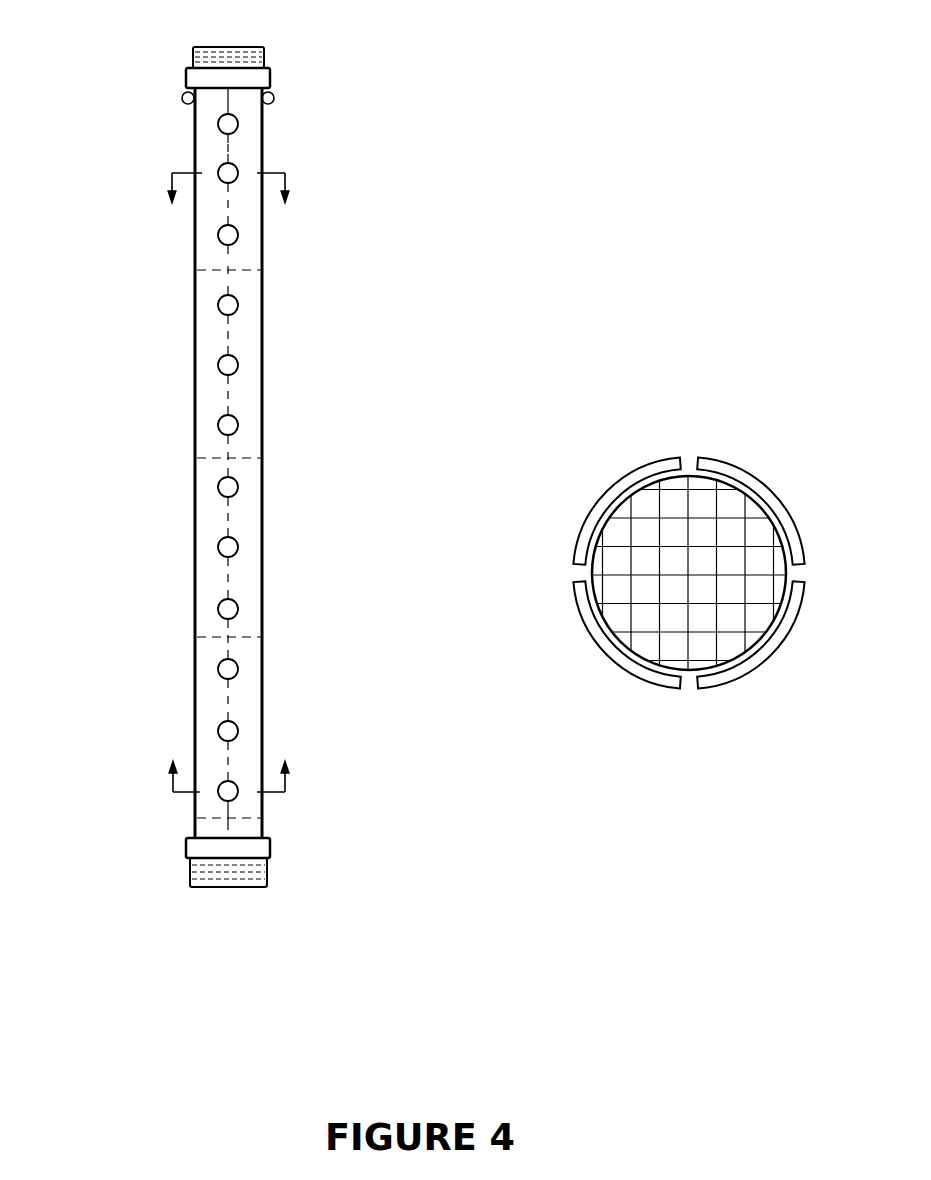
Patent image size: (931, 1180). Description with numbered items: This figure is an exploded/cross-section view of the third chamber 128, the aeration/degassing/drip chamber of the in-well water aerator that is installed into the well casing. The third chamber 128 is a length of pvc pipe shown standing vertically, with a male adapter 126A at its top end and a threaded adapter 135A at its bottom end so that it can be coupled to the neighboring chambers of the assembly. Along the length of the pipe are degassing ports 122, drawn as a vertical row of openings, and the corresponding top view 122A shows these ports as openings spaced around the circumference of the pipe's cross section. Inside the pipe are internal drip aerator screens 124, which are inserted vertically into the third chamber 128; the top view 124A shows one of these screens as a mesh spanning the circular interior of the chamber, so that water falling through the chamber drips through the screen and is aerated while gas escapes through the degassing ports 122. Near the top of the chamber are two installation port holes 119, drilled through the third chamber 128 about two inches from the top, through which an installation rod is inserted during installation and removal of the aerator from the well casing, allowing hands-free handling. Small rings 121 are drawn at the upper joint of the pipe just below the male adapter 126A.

The installation port holes 119 is at (241, 123).
The rings 121 is at (259, 95).
The degassing ports 122 is at (241, 235).
The internal drip aerator screens 124 is at (192, 272).
The male adapter 126A is at (266, 57).
The third chamber 128 is at (265, 365).
The bottom threaded cap 135A is at (269, 868).
The internal drip aerator screen (top view) 124A is at (730, 537).
The degassing ports (top view) 122A is at (690, 472).